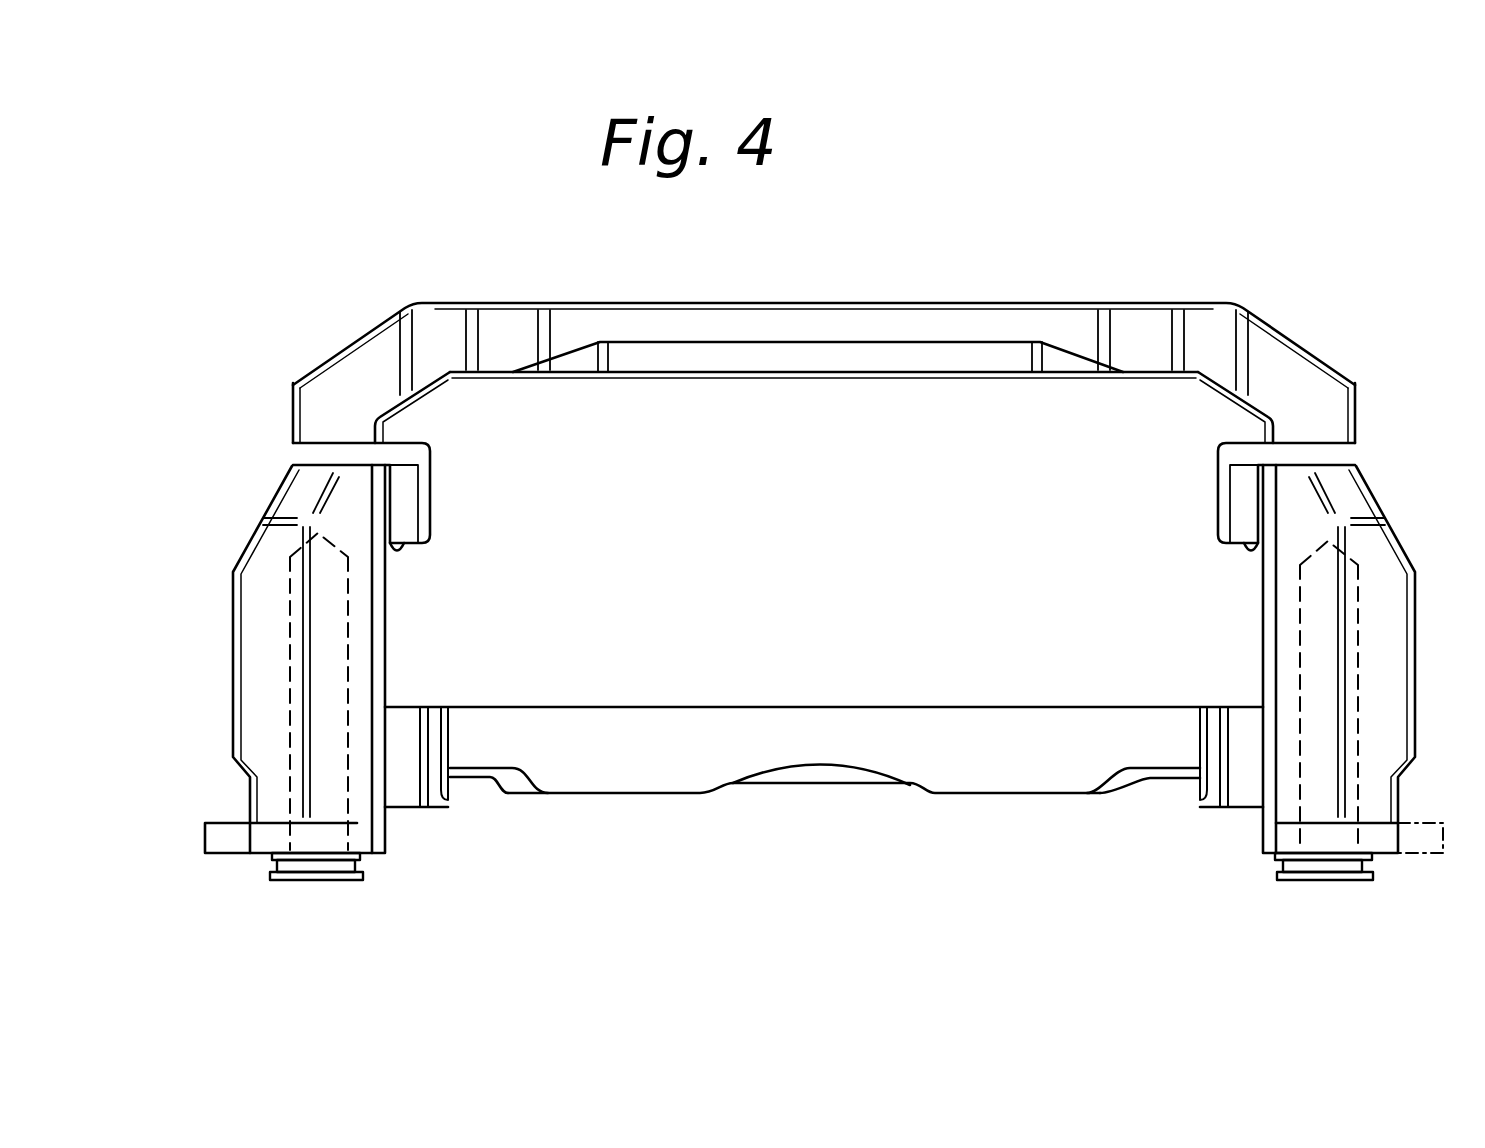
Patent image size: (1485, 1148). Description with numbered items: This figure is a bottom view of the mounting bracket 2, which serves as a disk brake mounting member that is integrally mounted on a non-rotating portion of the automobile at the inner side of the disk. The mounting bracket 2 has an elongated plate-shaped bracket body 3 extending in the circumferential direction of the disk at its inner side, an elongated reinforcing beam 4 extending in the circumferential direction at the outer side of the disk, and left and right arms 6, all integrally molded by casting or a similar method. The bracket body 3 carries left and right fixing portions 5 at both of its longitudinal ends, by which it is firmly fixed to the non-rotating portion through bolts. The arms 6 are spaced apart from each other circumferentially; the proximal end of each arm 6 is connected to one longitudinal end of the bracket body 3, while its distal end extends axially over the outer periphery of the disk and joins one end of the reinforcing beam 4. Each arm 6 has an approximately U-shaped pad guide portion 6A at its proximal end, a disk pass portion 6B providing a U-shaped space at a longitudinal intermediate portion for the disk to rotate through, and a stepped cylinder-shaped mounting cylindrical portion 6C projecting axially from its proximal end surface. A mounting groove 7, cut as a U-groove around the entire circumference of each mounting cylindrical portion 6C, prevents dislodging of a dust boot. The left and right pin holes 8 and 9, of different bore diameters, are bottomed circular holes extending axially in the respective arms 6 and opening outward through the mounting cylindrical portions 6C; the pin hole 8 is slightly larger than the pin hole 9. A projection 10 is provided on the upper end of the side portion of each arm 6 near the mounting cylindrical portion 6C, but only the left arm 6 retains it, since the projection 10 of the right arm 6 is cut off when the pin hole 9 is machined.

The mounting bracket 2 is at (1372, 455).
The bracket body 3 is at (850, 750).
The reinforcing beam 4 is at (808, 318).
The fixing portion 5 is at (620, 795).
The arm 6 is at (243, 590).
The pad guide portion 6A is at (437, 790).
The disk pass portion 6B is at (390, 557).
The mounting cylindrical portion 6C is at (270, 880).
The mounting groove 7 is at (363, 862).
The pin hole 8 is at (294, 665).
The pin hole 9 is at (1355, 697).
The projection 10 is at (217, 835).